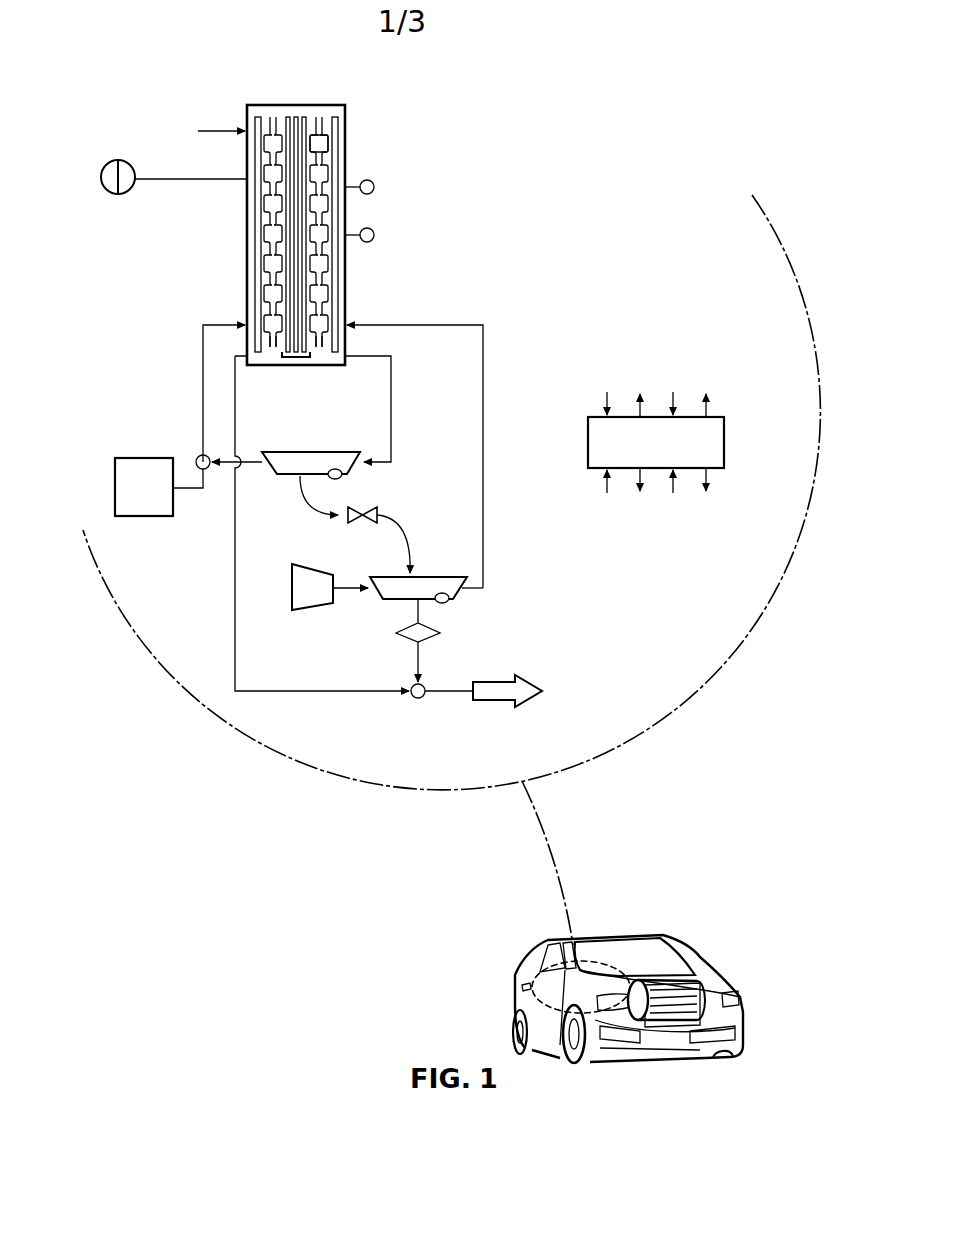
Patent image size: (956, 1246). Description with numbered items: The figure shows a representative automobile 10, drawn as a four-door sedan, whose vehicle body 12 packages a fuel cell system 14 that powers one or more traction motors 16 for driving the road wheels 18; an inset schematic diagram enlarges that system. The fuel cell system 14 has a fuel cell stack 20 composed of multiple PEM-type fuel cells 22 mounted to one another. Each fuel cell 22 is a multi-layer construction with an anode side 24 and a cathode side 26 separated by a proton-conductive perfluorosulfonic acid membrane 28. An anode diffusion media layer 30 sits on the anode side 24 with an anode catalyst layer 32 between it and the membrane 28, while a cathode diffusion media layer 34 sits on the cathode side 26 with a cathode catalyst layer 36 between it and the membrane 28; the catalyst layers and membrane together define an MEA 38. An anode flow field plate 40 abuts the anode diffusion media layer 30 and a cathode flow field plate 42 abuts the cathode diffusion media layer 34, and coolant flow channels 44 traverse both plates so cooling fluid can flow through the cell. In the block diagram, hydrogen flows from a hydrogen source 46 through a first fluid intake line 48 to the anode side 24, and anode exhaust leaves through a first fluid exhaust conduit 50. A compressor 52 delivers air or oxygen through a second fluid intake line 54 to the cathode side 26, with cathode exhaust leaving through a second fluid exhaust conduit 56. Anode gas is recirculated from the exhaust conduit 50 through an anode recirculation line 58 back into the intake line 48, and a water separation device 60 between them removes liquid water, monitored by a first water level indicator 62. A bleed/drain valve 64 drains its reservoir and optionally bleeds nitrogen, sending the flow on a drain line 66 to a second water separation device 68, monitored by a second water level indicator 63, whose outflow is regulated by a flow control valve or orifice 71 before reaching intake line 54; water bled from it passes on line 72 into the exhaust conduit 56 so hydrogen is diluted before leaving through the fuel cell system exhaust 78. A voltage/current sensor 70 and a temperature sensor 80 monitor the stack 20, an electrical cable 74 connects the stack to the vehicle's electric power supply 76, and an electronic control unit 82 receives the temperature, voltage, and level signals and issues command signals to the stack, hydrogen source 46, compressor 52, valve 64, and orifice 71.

The automobile 10 is at (629, 954).
The vehicle body 12 is at (710, 985).
The fuel cell system 14 is at (651, 46).
The traction motor 16 is at (677, 983).
The road wheels 18 is at (517, 1012).
The fuel cell stack 20 is at (303, 220).
The fuel cell 22 is at (351, 108).
The anode side 24 is at (245, 159).
The cathode side 26 is at (347, 167).
The proton-conductive perfluorosulfonic acid membrane 28 is at (297, 117).
The anode diffusion media layer 30 is at (285, 117).
The anode catalyst layer 32 is at (290, 116).
The cathode diffusion media layer 34 is at (308, 117).
The cathode catalyst layer 36 is at (303, 117).
The MEA 38 is at (296, 358).
The anode flow field plate 40 is at (270, 348).
The cathode flow field plate 42 is at (320, 348).
The coolant flow channels 44 is at (320, 145).
The hydrogen source 46 is at (132, 458).
The fluid intake line 48 is at (203, 328).
The fluid exhaust conduit 50 is at (393, 358).
The compressor 52 is at (301, 611).
The fluid intake line 54 is at (220, 126).
The fluid exhaust conduit 56 is at (235, 574).
The anode recirculation line 58 is at (261, 465).
The water separation device 60 is at (311, 452).
The first water level indicator 62 is at (342, 477).
The second water level indicator 63 is at (449, 601).
The bleed/drain valve 64 is at (358, 521).
The drain line 66 is at (409, 546).
The second water separation device 68 is at (391, 577).
The voltage/current sensor 70 is at (374, 188).
The flow control valve or orifice 71 is at (399, 629).
The line 72 is at (417, 661).
The electrical connector or cable 74 is at (168, 181).
The electric power supply 76 is at (101, 177).
The fuel cell system exhaust 78 is at (478, 701).
The temperature sensor 80 is at (374, 236).
The electronic control unit 82 is at (588, 425).